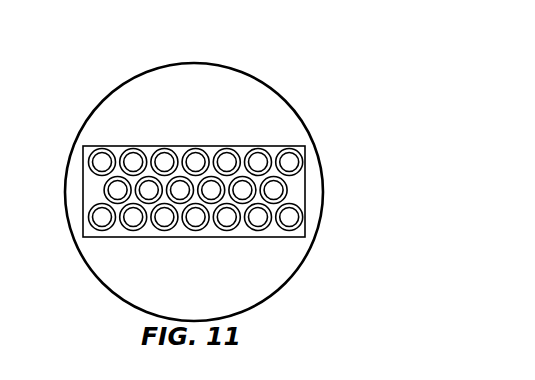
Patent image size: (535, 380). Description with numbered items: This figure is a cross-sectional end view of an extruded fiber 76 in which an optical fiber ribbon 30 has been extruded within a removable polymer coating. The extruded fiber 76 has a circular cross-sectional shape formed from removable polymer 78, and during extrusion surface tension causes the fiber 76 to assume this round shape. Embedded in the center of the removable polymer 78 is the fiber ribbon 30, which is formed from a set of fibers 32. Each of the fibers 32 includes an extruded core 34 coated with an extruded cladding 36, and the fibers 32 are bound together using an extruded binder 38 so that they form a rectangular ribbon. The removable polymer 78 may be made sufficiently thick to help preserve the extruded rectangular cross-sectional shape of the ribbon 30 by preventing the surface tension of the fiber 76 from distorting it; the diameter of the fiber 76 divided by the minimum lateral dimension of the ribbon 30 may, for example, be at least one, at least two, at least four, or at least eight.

The fiber ribbon 30 is at (299, 146).
The fibers 32 is at (197, 237).
The cores 34 is at (197, 159).
The cladding 36 is at (259, 155).
The binder 38 is at (113, 150).
The extruded fiber 76 is at (287, 93).
The removable polymer 78 is at (294, 128).